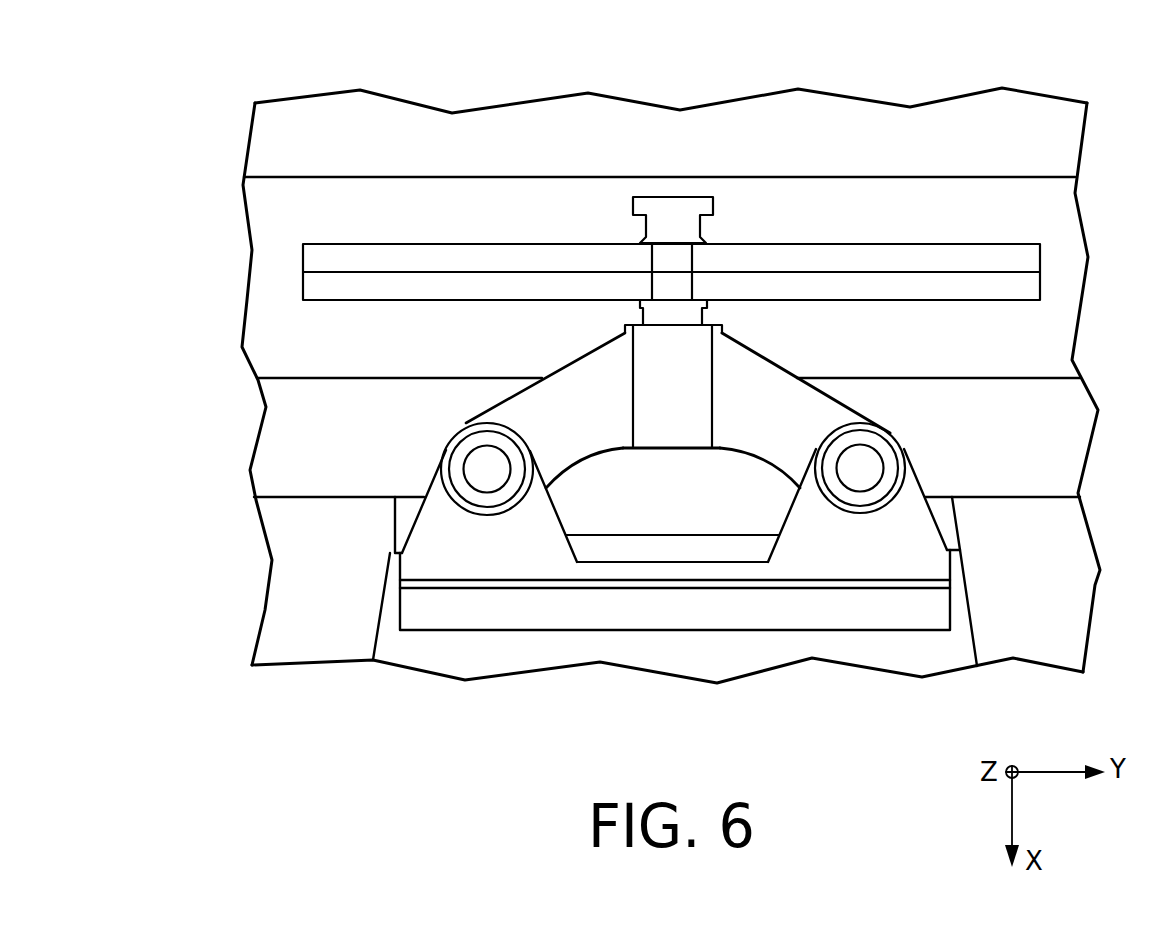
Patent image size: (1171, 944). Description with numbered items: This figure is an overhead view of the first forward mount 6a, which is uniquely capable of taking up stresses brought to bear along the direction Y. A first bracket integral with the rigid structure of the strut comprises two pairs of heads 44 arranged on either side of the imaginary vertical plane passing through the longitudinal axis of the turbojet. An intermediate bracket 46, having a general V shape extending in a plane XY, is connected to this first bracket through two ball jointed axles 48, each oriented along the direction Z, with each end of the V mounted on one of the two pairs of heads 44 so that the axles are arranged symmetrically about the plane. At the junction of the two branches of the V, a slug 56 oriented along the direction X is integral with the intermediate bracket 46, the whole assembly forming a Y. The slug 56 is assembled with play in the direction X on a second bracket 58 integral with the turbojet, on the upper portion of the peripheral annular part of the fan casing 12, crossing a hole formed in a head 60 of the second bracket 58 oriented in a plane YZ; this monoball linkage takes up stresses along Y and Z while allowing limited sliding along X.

The first forward mount 6a is at (850, 120).
The fan casing 12 is at (1045, 213).
The pair of heads 44 is at (684, 472).
The intermediate bracket 46 is at (578, 393).
The ball jointed axle 48 is at (490, 480).
The slug 56 is at (688, 207).
The second bracket 58 is at (656, 227).
The head 60 is at (1027, 281).